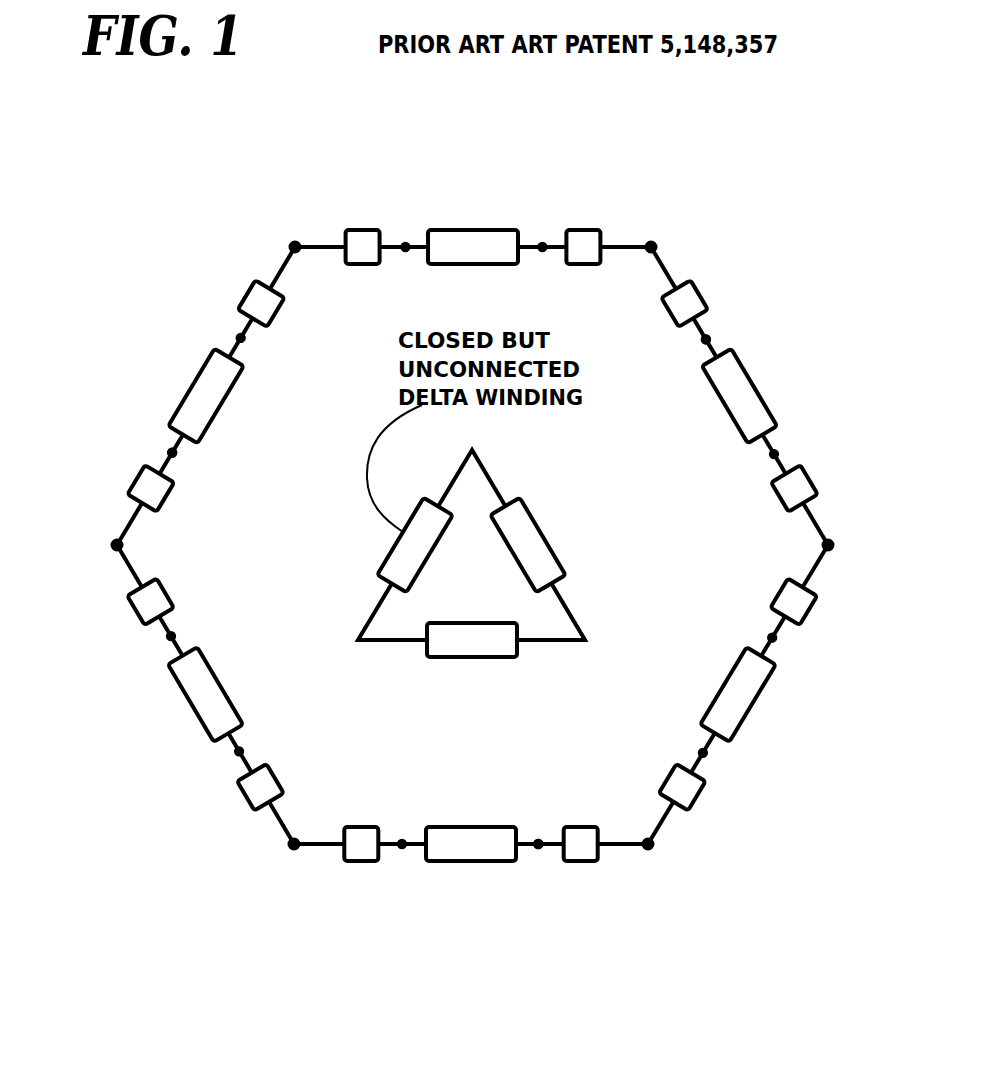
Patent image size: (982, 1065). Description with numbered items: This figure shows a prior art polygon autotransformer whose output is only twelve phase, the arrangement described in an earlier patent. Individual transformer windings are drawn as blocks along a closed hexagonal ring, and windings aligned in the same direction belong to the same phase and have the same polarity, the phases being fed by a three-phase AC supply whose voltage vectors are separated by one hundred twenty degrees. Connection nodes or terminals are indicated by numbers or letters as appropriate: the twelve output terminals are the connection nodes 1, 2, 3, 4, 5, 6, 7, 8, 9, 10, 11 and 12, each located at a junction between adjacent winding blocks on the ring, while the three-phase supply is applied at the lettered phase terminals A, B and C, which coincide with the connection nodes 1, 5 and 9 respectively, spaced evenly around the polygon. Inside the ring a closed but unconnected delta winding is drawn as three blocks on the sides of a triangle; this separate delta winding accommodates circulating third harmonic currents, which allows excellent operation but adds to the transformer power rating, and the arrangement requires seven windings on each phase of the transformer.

The connection node 1 is at (706, 339).
The connection node 2 is at (774, 454).
The connection node 3 is at (772, 638).
The connection node 4 is at (703, 753).
The connection node 5 is at (538, 844).
The connection node 6 is at (402, 844).
The connection node 7 is at (239, 751).
The connection node 8 is at (171, 636).
The connection node 9 is at (172, 453).
The connection node 10 is at (241, 338).
The connection node 11 is at (405, 247).
The connection node 12 is at (542, 247).
The phase terminal A is at (706, 339).
The phase terminal B is at (538, 844).
The phase terminal C is at (172, 453).